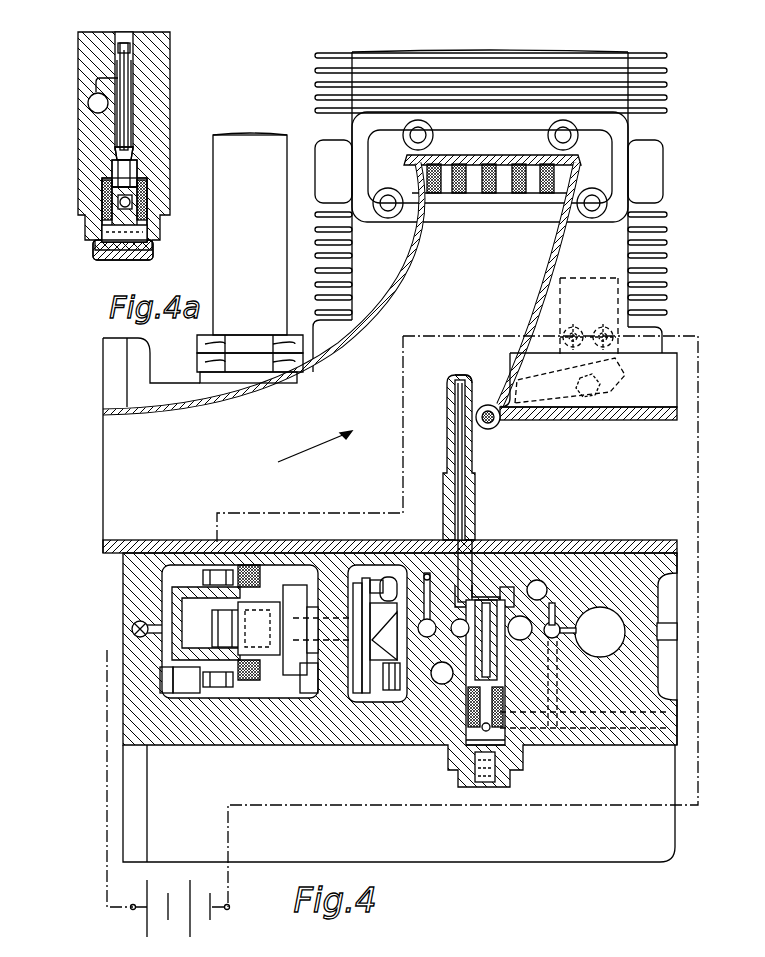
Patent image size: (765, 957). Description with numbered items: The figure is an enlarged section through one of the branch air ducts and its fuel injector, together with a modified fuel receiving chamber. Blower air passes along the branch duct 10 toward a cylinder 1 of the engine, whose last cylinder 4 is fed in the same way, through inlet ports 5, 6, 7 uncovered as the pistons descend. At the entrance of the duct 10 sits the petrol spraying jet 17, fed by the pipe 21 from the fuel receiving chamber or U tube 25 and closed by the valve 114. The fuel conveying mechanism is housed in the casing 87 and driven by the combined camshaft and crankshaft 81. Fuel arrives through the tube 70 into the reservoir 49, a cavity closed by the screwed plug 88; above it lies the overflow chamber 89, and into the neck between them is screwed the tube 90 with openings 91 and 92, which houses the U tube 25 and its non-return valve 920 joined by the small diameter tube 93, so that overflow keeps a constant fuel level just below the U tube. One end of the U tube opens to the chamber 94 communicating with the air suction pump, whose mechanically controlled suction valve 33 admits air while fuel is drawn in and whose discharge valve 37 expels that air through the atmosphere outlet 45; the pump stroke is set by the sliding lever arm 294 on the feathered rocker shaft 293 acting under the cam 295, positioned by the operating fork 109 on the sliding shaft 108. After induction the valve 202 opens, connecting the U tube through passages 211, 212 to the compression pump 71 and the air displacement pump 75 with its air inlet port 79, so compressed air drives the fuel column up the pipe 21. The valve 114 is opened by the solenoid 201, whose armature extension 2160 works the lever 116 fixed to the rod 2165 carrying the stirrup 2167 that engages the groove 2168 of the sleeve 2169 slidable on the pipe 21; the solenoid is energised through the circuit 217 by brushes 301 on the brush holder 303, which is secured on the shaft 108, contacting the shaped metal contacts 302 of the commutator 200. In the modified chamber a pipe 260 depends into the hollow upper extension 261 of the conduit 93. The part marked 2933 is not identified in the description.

In FIG. 4, the cylinder 1 is at (393, 55).
In FIG. 4, the cylinder 4 is at (607, 868).
In FIG. 4, the port 5 is at (527, 882).
In FIG. 4, the port 6 is at (430, 885).
In FIG. 4, the port 7 is at (133, 628).
In FIG. 4, the branch duct 10 is at (342, 283).
In FIG. 4, the fuel spraying jet 17 is at (453, 378).
In FIG. 4, the pipe 21 is at (473, 480).
In FIG. 4, the fuel receiving chamber or U tube 25 is at (484, 573).
In FIG. 4A, the suction valve 33 is at (88, 103).
In FIG. 4, the discharge valve 37 is at (418, 665).
In FIG. 4, the atmosphere outlet 45 is at (441, 540).
In FIG. 4A, the fuel reservoir 49 is at (120, 258).
In FIG. 4, the fuel reservoir 49 is at (470, 790).
In FIG. 4, the tube 70 is at (617, 745).
In FIG. 4, the compression pump 71 is at (584, 632).
In FIG. 4, the air displacement pump 75 is at (558, 622).
In FIG. 4, the air inlet port 79 is at (610, 580).
In FIG. 4, the combined camshaft and crankshaft 81 is at (302, 698).
In FIG. 4, the casing 87 is at (180, 745).
In FIG. 4A, the screwed plug 88 is at (100, 240).
In FIG. 4, the screwed plug 88 is at (483, 790).
In FIG. 4A, the overflow chamber 89 is at (131, 150).
In FIG. 4, the overflow chamber 89 is at (520, 628).
In FIG. 4, the tube 90 is at (500, 790).
In FIG. 4A, the opening 91 is at (102, 185).
In FIG. 4, the opening 91 is at (460, 772).
In FIG. 4A, the opening 92 is at (112, 156).
In FIG. 4A, the small diameter tube 93 is at (137, 168).
In FIG. 4, the small diameter tube 93 is at (548, 728).
In FIG. 4A, the chamber 94 is at (112, 78).
In FIG. 4, the chamber 94 is at (478, 590).
In FIG. 4, the sliding bar or shaft 108 is at (309, 639).
In FIG. 4, the operating fork 109 is at (385, 690).
In FIG. 4, the valve 114 is at (465, 378).
In FIG. 4, the lever 116 is at (551, 398).
In FIG. 4, the commutator 200 is at (245, 690).
In FIG. 4, the solenoid 201 is at (612, 358).
In FIG. 4, the valve 202 is at (540, 620).
In FIG. 4, the outlet passage 211 is at (590, 570).
In FIG. 4, the passage 212 is at (500, 600).
In FIG. 4, the circuit 217 is at (296, 258).
In FIG. 4A, the pipe 260 is at (129, 60).
In FIG. 4A, the hollow upper extension 261 is at (133, 95).
In FIG. 4, the rocker shaft 293 is at (358, 583).
In FIG. 4, the sliding lever arm 294 is at (392, 578).
In FIG. 4, the cam 295 is at (372, 640).
In FIG. 4, the brushes 301 is at (262, 600).
In FIG. 4, the shaped metal contacts 302 is at (236, 605).
In FIG. 4, the commutator brush holder 303 is at (180, 587).
In FIG. 4A, the non-return valve 920 is at (130, 202).
In FIG. 4, the non-return valve 920 is at (490, 790).
In FIG. 4, the extension 2160 is at (588, 403).
In FIG. 4, the rod 2165 is at (494, 428).
In FIG. 4, the stirrup 2167 is at (499, 400).
In FIG. 4, the groove 2168 is at (447, 412).
In FIG. 4, the sleeve 2169 is at (447, 424).
In FIG. 4, the terminal 2933 is at (440, 690).